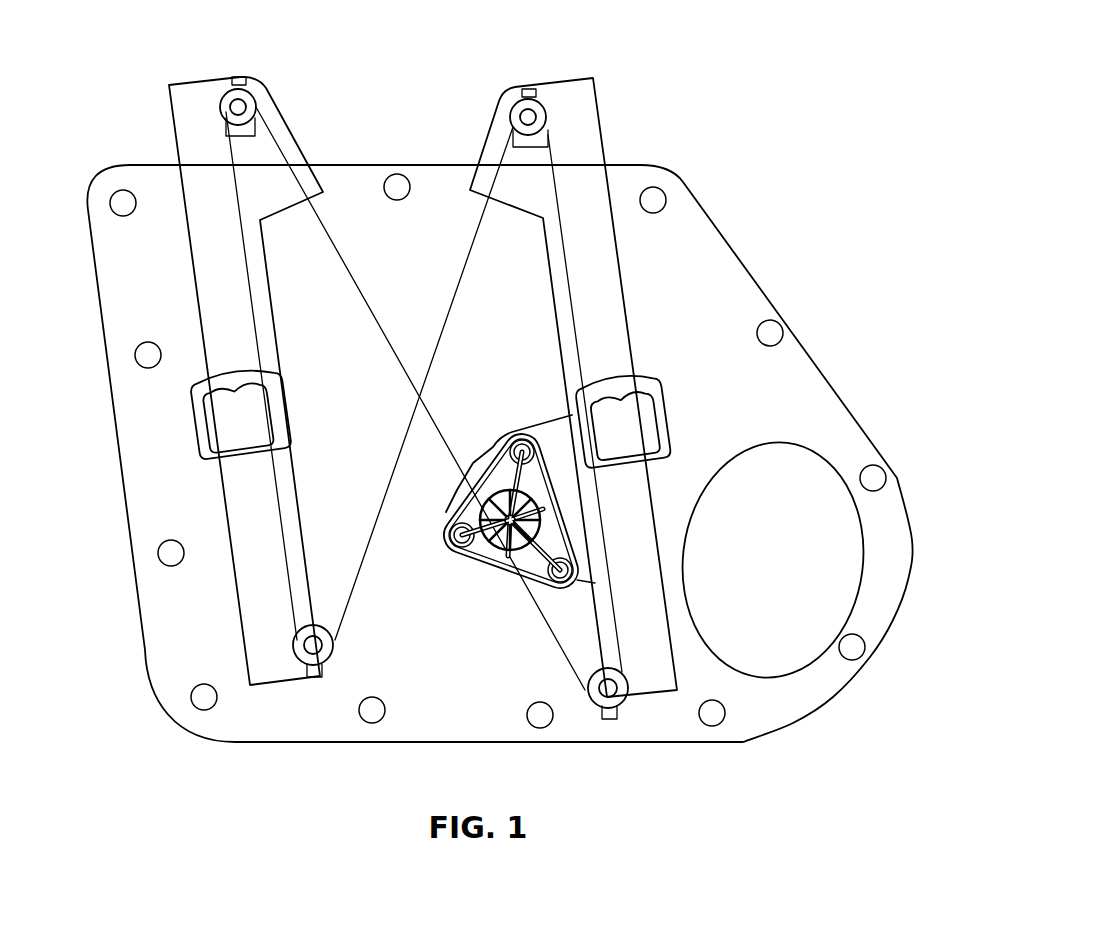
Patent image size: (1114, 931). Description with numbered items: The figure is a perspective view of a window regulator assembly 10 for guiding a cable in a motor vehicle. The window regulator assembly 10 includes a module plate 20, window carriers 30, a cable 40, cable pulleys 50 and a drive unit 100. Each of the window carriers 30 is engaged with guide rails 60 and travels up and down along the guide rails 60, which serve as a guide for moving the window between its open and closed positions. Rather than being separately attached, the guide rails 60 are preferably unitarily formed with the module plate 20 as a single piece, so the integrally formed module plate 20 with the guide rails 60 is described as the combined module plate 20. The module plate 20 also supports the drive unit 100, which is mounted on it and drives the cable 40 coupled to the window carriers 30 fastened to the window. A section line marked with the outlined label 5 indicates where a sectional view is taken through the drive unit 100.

The window regulator assembly 10 is at (980, 67).
The module plate 20 is at (752, 254).
The window carriers 30 is at (670, 437).
The cable 40 is at (327, 228).
The cable pulleys 50 is at (531, 118).
The guide rails 60 is at (278, 673).
The drive unit 100 is at (540, 498).
The section line for FIG. 5 is at (438, 541).